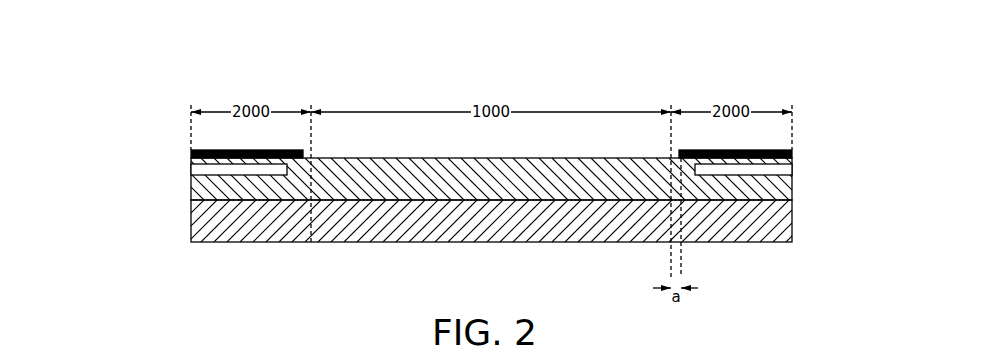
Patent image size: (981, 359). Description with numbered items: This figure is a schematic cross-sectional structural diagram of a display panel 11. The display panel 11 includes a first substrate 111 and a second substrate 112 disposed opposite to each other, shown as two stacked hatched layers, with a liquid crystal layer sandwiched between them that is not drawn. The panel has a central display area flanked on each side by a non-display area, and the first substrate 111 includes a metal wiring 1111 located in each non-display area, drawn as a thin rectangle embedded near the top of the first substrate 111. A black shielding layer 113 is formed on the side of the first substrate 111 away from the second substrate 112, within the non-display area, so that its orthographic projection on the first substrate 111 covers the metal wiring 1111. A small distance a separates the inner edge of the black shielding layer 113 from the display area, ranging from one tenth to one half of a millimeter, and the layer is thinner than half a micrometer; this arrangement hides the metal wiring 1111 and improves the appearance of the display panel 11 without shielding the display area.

The display panel 11 is at (178, 30).
The first substrate 111 is at (753, 187).
The second substrate 112 is at (755, 233).
The black shielding layer 113 is at (792, 153).
The metal wiring 1111 is at (192, 169).